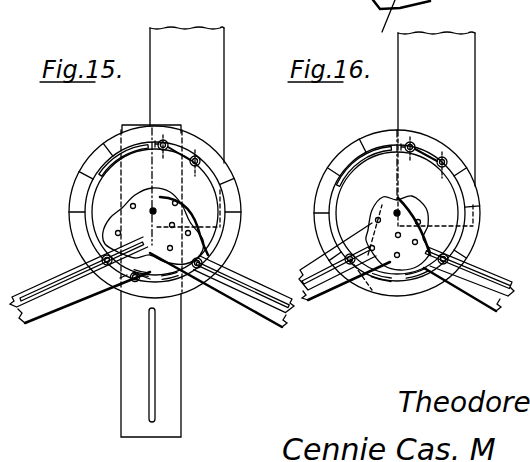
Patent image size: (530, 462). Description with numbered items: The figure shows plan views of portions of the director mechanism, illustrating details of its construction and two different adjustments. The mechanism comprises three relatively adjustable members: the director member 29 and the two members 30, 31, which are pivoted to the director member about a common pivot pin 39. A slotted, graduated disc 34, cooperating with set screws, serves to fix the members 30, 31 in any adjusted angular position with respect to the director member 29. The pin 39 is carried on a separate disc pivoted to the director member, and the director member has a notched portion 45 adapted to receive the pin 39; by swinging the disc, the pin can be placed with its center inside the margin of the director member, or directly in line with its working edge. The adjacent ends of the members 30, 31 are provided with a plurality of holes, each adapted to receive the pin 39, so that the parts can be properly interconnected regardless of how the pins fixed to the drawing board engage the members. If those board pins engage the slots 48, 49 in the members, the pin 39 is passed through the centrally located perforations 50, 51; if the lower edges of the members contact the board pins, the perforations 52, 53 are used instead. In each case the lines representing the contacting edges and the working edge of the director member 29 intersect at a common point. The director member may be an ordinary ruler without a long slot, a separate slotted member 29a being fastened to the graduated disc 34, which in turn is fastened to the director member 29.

In FIG. 15, the director member 29 is at (212, 48).
In FIG. 16, the director member 29 is at (458, 50).
In FIG. 15, the slotted member 29a is at (178, 343).
In FIG. 16, the slotted member 29a is at (411, 210).
In FIG. 15, the adjustable member 30 is at (32, 325).
In FIG. 16, the adjustable member 30 is at (315, 256).
In FIG. 15, the adjustable member 31 is at (242, 315).
In FIG. 16, the adjustable member 31 is at (468, 290).
In FIG. 15, the graduated disc 34 is at (104, 143).
In FIG. 16, the graduated disc 34 is at (329, 145).
In FIG. 15, the pin 39 is at (153, 211).
In FIG. 16, the pin 39 is at (397, 213).
In FIG. 15, the notched portion 45 is at (184, 220).
In FIG. 16, the notched portion 45 is at (418, 202).
In FIG. 15, the slot 48 is at (52, 288).
In FIG. 16, the slot 48 is at (325, 283).
In FIG. 15, the slot 49 is at (240, 278).
In FIG. 16, the slot 49 is at (492, 267).
In FIG. 15, the centrally located perforation 50 is at (165, 213).
In FIG. 16, the centrally located perforation 50 is at (397, 233).
In FIG. 15, the centrally located perforation 51 is at (133, 222).
In FIG. 16, the centrally located perforation 51 is at (382, 214).
In FIG. 15, the perforation 52 is at (173, 223).
In FIG. 16, the perforation 52 is at (427, 227).
In FIG. 15, the perforation 53 is at (185, 270).
In FIG. 16, the perforation 53 is at (397, 255).